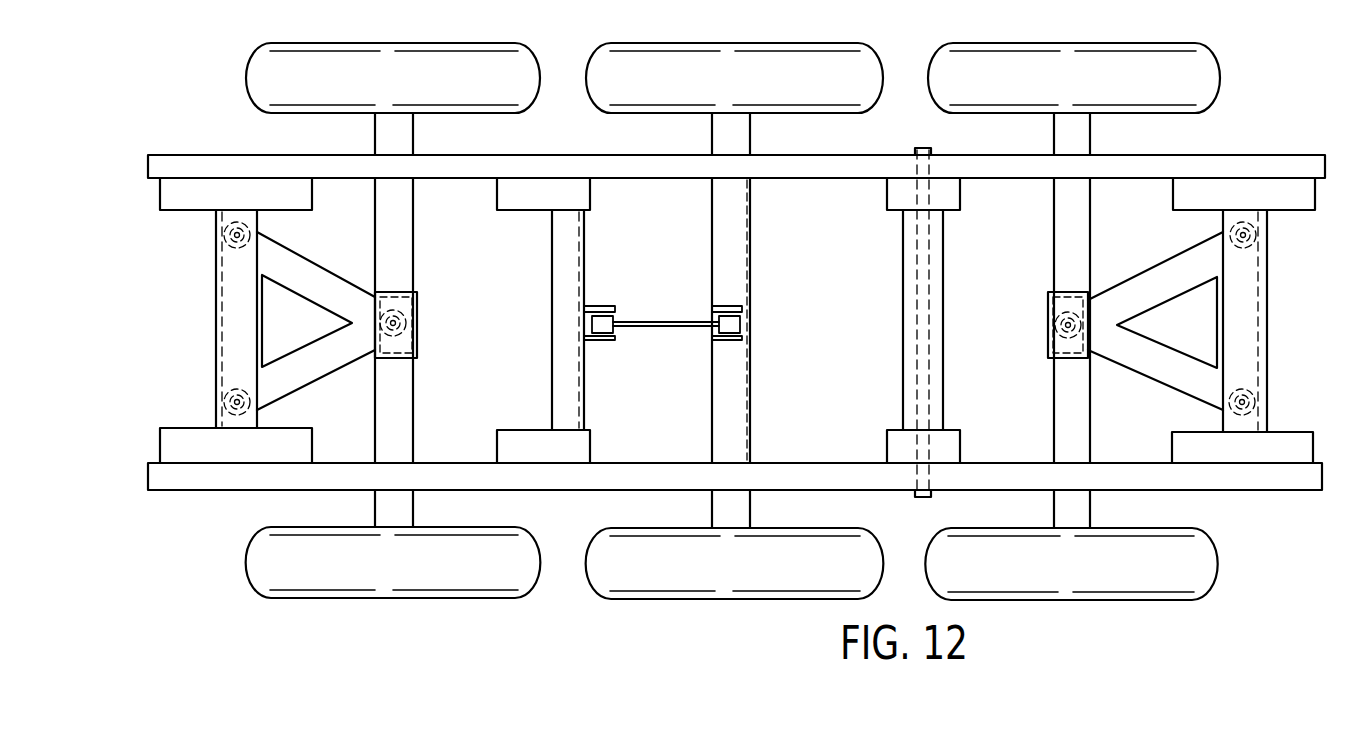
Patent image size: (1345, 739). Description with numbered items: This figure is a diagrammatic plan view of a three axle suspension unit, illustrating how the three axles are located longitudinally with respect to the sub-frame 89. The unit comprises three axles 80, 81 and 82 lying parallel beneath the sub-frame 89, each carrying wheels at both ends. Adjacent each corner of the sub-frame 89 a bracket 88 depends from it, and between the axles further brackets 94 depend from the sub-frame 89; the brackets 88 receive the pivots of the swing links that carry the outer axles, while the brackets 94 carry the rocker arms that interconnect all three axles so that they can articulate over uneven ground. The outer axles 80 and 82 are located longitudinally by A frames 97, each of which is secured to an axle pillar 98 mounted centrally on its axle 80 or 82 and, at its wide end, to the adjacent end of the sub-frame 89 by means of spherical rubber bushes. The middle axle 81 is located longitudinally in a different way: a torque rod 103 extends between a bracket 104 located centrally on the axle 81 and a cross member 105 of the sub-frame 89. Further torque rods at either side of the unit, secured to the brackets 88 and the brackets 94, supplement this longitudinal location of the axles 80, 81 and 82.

The axle 80 is at (385, 221).
The axle 81 is at (735, 229).
The axle 82 is at (1065, 250).
The bracket 88 is at (183, 192).
The sub-frame 89 is at (217, 163).
The bracket 94 is at (545, 187).
The A frame 97 is at (302, 365).
The axle pillar 98 is at (417, 305).
The torque rod 103 is at (663, 330).
The bracket 104 is at (742, 305).
The cross member 105 is at (566, 254).